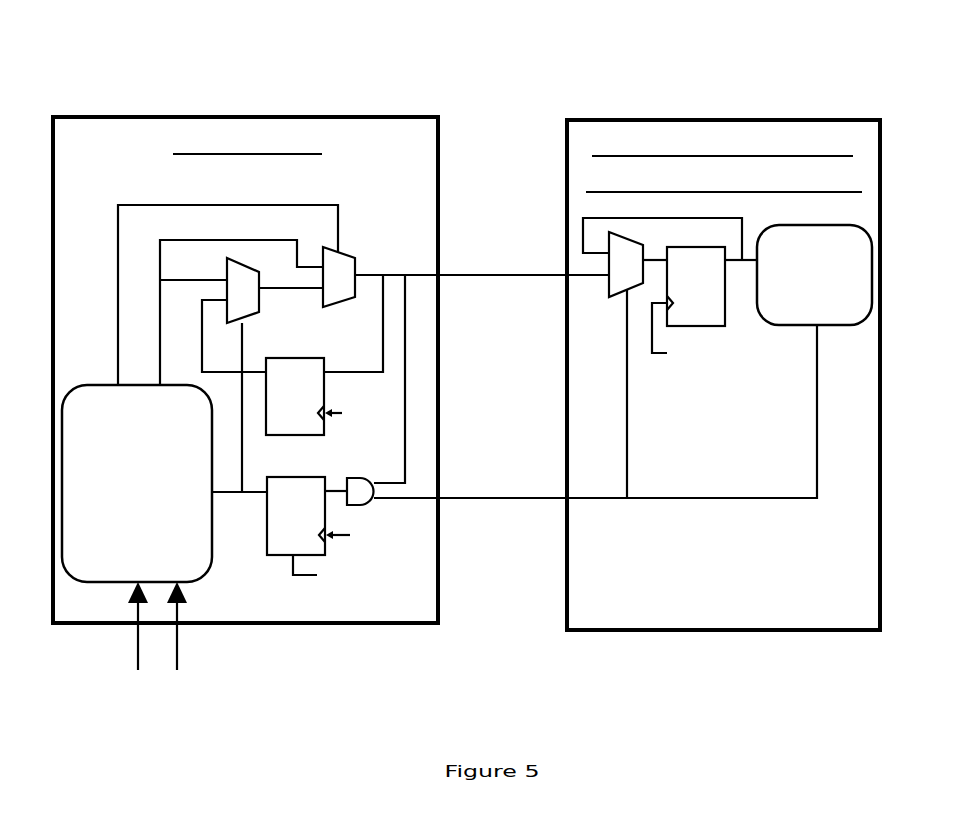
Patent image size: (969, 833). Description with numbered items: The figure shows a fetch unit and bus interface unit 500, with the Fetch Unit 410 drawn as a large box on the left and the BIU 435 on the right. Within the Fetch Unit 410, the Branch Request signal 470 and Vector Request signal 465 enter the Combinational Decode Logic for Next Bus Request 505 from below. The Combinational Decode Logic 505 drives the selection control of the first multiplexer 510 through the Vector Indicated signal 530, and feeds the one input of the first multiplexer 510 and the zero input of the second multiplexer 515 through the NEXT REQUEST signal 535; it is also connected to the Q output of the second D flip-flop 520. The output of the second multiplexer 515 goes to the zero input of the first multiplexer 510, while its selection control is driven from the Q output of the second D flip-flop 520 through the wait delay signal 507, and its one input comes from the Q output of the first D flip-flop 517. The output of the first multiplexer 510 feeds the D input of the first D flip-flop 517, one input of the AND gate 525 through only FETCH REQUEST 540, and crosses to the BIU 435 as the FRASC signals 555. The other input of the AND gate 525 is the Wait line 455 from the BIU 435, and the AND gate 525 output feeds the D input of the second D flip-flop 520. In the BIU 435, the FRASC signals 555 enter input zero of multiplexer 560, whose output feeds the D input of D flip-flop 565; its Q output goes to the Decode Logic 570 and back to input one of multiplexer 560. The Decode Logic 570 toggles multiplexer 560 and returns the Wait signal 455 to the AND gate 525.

The fetch unit and bus interface unit 500 is at (490, 58).
The fetch unit 410 is at (160, 117).
The bus interface unit 435 is at (743, 120).
The combinational decode logic for next bus request 505 is at (164, 483).
The wait_delay_1 507 is at (234, 407).
The first multiplexer 510 is at (358, 257).
The second multiplexer 515 is at (246, 318).
The first D flip-flop 517 is at (304, 355).
The second D flip-flop 520 is at (307, 477).
The AND gate 525 is at (377, 533).
The Vector Indicated signal 530 is at (241, 198).
The NEXT REQUEST signal 535 is at (245, 302).
The only FETCH REQUEST 540 is at (404, 379).
The Fetch Request, Address, Size and Control (FRASC) signals 555 is at (482, 270).
The Wait line 455 is at (595, 411).
The multiplexer 560 is at (609, 289).
The D flip-flop 565 is at (725, 315).
The decode logic 570 is at (814, 275).
The Vector Request signal 465 is at (180, 641).
The Branch Request signal 470 is at (131, 641).